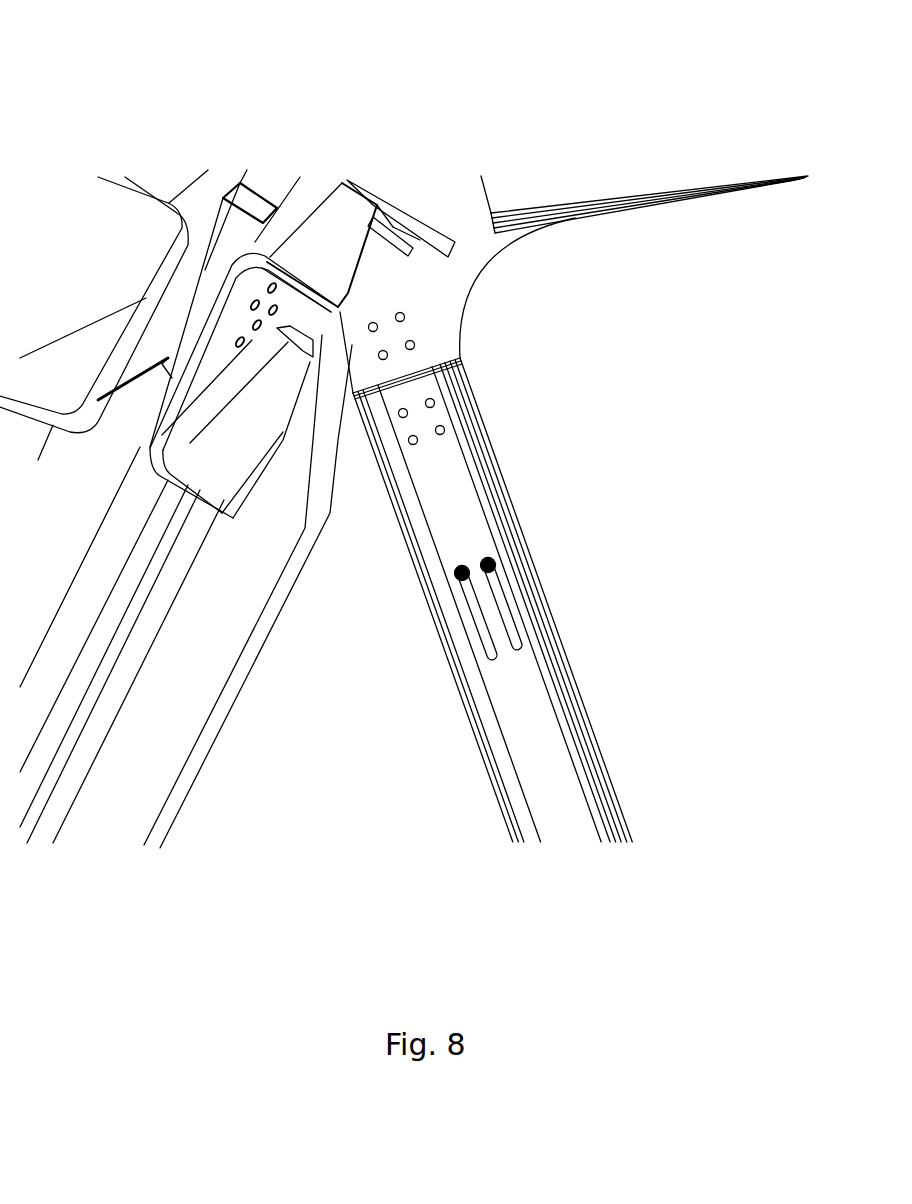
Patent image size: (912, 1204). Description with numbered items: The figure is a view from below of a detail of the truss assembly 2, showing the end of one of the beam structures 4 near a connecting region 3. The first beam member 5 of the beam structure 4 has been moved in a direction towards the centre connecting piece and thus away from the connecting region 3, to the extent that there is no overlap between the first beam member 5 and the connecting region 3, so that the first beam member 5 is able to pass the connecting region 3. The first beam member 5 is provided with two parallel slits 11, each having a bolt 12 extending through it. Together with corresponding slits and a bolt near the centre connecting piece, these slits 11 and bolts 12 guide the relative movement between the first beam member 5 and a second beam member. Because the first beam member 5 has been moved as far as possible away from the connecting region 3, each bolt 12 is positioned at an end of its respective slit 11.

The truss assembly 2 is at (240, 116).
The connecting region 3 is at (432, 295).
The beam structure 4 is at (580, 693).
The first beam member 5 is at (538, 761).
The slits 11 is at (473, 608).
The bolts 12 is at (495, 562).